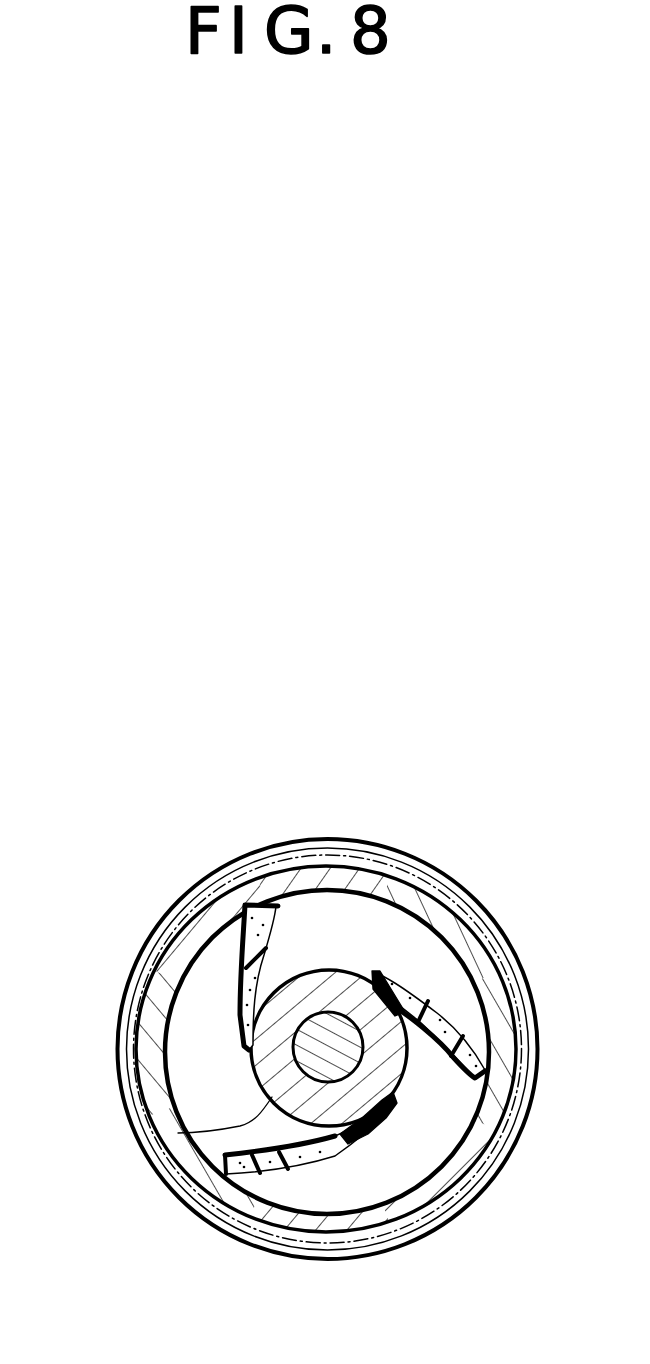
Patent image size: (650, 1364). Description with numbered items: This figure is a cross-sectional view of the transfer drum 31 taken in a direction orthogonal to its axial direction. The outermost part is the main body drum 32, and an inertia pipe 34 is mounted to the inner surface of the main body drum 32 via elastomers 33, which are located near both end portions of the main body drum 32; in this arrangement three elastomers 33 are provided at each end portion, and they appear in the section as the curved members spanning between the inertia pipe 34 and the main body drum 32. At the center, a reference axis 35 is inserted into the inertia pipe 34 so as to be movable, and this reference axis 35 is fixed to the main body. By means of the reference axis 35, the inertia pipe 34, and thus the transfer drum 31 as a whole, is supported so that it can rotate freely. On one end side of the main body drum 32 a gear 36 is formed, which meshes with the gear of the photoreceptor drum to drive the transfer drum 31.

The transfer drum 31 is at (130, 740).
The main body drum 32 is at (440, 1226).
The elastomer 33 is at (240, 955).
The inertia pipe 34 is at (253, 1054).
The reference axis 35 is at (149, 1154).
The gear 36 is at (446, 874).